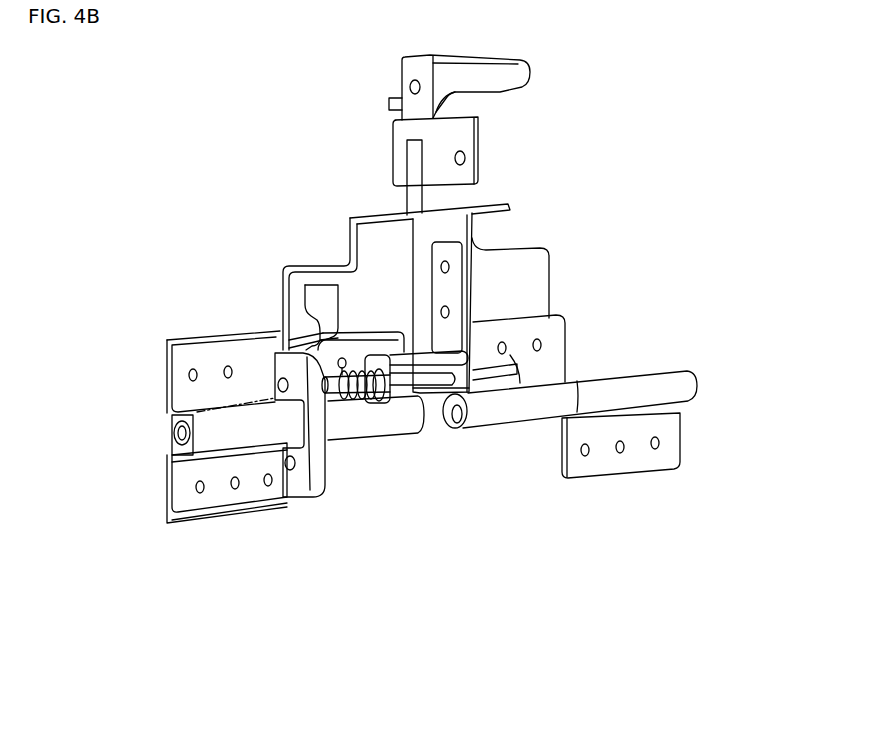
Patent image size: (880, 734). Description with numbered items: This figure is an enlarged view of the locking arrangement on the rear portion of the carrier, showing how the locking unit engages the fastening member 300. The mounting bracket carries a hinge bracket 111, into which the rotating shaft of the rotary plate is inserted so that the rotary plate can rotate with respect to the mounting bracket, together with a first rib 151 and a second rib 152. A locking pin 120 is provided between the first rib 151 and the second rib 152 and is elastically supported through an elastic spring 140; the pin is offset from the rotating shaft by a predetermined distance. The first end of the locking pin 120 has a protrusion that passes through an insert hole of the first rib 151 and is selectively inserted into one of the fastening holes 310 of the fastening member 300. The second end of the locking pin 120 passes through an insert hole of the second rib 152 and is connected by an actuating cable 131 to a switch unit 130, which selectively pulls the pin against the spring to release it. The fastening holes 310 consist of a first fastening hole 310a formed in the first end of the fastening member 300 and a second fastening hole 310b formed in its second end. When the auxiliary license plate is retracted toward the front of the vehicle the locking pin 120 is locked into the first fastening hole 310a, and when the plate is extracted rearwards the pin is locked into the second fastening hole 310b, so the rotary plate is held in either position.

The hinge bracket 111 is at (487, 408).
The locking pin 120 is at (278, 382).
The switch unit 130 is at (513, 75).
The actuating cable 131 is at (412, 190).
The elastic spring 140 is at (372, 402).
The first rib 151 is at (445, 283).
The second rib 152 is at (320, 305).
The fastening member 300 is at (318, 452).
The fastening holes 310 is at (265, 563).
The first fastening hole 310a is at (286, 470).
The second fastening hole 310b is at (283, 395).